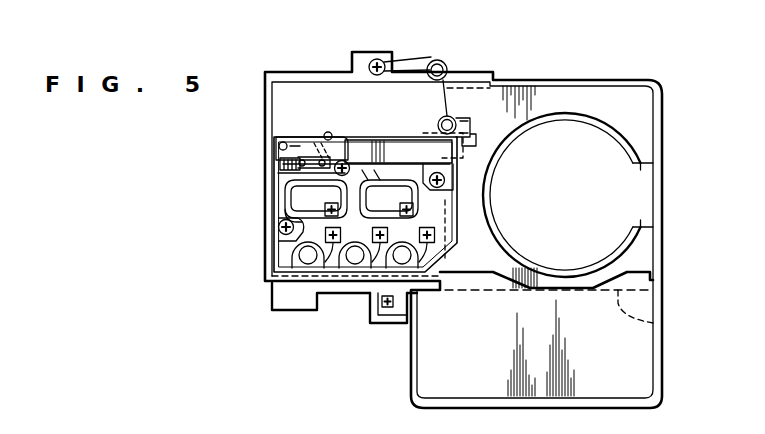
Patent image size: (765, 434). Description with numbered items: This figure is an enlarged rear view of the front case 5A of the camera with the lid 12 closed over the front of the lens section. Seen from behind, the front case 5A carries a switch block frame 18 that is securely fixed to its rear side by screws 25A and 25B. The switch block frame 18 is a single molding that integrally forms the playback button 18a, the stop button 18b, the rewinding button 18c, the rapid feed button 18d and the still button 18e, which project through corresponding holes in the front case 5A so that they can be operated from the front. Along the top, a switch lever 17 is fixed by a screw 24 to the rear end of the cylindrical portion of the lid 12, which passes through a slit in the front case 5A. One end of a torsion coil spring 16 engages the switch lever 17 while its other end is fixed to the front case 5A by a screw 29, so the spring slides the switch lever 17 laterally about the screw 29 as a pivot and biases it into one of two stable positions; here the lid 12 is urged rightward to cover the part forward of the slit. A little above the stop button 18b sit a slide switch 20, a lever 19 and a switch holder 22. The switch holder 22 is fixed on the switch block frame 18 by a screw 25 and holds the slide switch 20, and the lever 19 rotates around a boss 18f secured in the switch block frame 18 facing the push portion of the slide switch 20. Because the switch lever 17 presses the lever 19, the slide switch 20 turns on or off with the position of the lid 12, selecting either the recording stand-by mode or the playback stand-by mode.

The front case 5A is at (573, 74).
The lid 12 is at (653, 323).
The torsion coil spring 16 is at (417, 57).
The switch lever 17 is at (473, 123).
The switch block frame 18 is at (297, 201).
The playback button 18a is at (400, 196).
The stop button 18b is at (296, 218).
The rewinding button 18c is at (399, 264).
The rapid feed button 18d is at (355, 264).
The still button 18e is at (306, 264).
The boss 18f is at (297, 143).
The lever 19 is at (329, 132).
The slide switch 20 is at (277, 162).
The switch holder 22 is at (290, 133).
The screw 24 is at (437, 148).
The screw 25 is at (341, 159).
The screw 25A is at (446, 180).
The screw 25B is at (284, 236).
The screw 29 is at (378, 59).